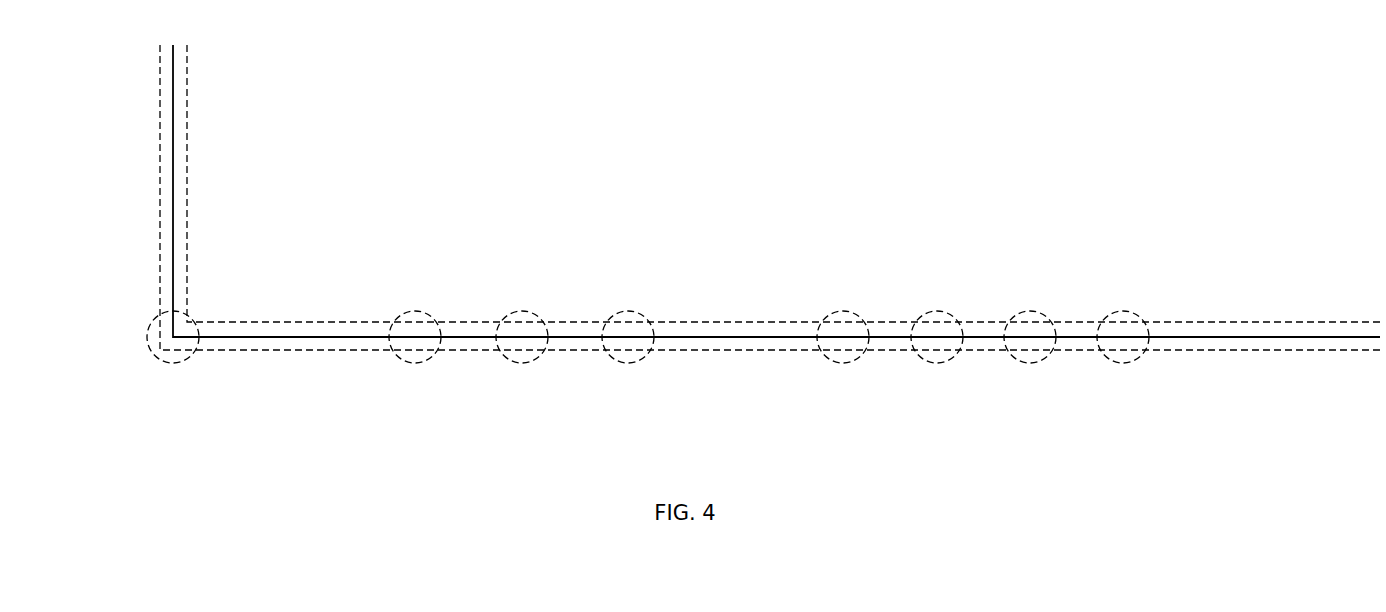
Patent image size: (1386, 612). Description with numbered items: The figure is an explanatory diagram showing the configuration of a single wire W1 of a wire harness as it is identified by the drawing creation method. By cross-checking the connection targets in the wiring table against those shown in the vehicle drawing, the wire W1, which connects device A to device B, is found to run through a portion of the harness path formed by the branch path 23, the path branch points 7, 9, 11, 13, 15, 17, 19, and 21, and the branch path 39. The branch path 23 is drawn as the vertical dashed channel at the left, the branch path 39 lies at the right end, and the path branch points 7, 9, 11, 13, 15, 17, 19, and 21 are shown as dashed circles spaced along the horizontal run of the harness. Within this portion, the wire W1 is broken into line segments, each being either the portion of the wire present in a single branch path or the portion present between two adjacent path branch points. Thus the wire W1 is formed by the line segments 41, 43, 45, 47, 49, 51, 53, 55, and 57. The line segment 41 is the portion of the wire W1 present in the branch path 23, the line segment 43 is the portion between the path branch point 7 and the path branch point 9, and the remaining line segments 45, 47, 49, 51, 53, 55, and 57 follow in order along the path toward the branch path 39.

The path branch point 7 is at (173, 363).
The path branch point 9 is at (415, 363).
The path branch point 11 is at (522, 363).
The path branch point 13 is at (628, 363).
The path branch point 15 is at (843, 363).
The path branch point 17 is at (937, 363).
The path branch point 19 is at (1030, 363).
The path branch point 21 is at (1123, 363).
The branch path 23 is at (160, 137).
The branch path 39 is at (1250, 352).
The line segment 41 is at (173, 178).
The line segment 43 is at (305, 338).
The line segment 45 is at (453, 338).
The line segment 47 is at (578, 338).
The line segment 49 is at (733, 338).
The line segment 51 is at (887, 338).
The line segment 53 is at (988, 338).
The line segment 55 is at (1080, 338).
The line segment 57 is at (1185, 338).
The wire W1 is at (481, 337).